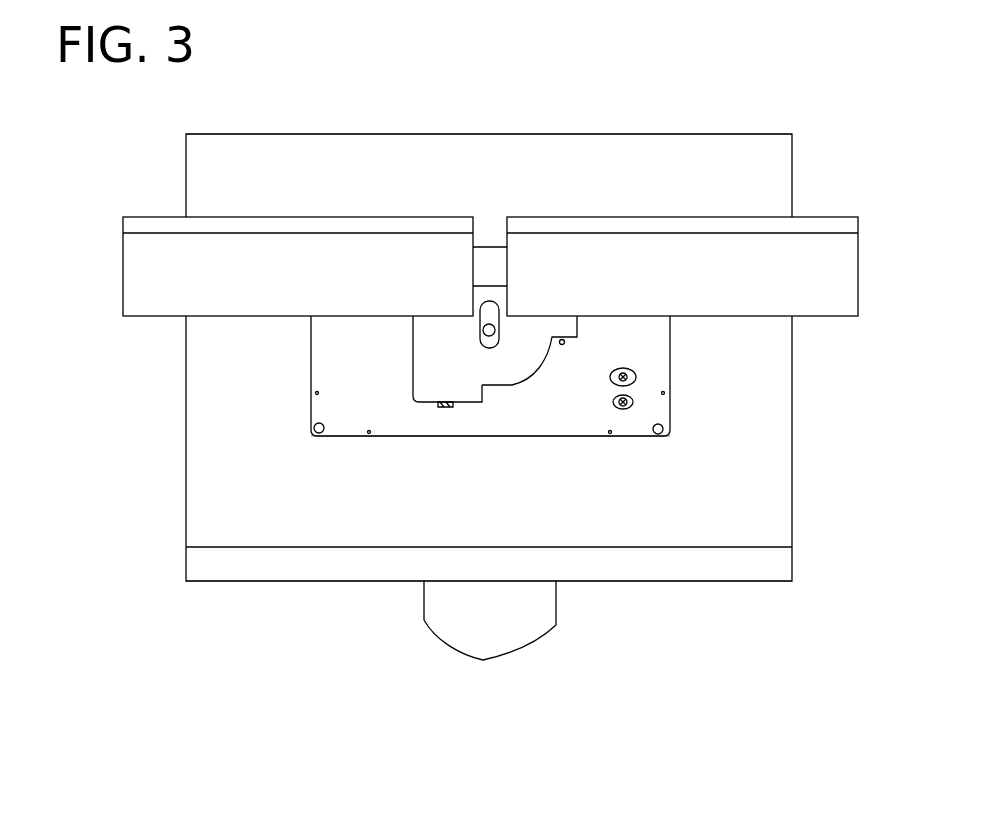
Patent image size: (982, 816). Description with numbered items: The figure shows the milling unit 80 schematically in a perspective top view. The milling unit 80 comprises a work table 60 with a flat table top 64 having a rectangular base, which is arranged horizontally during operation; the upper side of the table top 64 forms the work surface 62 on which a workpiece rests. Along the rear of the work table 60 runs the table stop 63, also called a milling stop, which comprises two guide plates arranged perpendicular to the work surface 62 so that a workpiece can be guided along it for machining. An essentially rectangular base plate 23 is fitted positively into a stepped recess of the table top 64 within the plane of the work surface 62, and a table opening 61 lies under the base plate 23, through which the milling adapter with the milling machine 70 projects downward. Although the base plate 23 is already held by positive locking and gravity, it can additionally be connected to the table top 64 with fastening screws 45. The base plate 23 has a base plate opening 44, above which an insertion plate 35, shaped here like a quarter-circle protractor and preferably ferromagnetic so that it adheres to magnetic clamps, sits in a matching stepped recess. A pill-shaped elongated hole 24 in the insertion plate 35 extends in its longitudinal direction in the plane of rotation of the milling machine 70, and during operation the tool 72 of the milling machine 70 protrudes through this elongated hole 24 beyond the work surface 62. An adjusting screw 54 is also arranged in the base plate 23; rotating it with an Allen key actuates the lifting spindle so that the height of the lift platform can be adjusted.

The base plate 23 is at (650, 357).
The elongated hole 24 is at (490, 320).
The insertion plate 35 is at (463, 383).
The base plate opening 44 is at (529, 372).
The fastening screws 45 is at (317, 433).
The adjusting screw 54 is at (633, 402).
The work table 60 is at (152, 458).
The table opening 61 is at (309, 408).
The work surface 62 is at (356, 495).
The table stop 63 is at (311, 255).
The table top 64 is at (753, 483).
The milling machine 70 is at (408, 611).
The tool 72 is at (490, 340).
The milling unit 80 is at (750, 636).